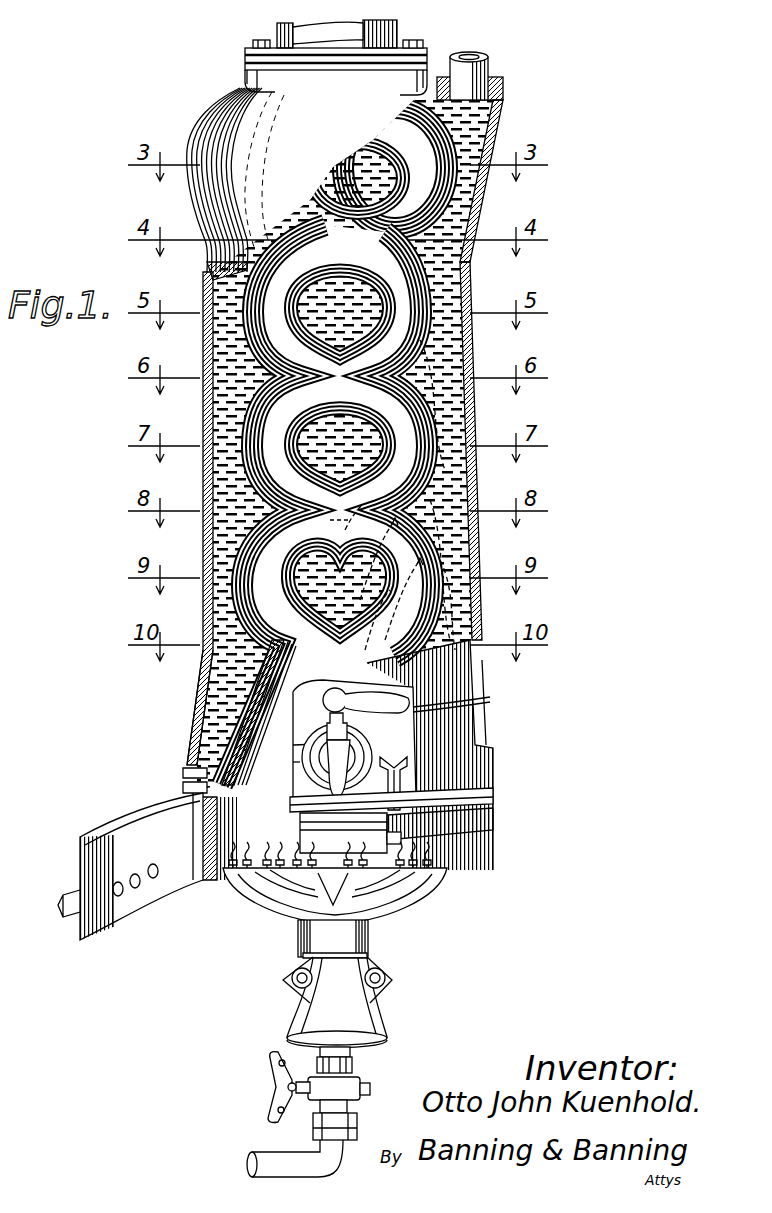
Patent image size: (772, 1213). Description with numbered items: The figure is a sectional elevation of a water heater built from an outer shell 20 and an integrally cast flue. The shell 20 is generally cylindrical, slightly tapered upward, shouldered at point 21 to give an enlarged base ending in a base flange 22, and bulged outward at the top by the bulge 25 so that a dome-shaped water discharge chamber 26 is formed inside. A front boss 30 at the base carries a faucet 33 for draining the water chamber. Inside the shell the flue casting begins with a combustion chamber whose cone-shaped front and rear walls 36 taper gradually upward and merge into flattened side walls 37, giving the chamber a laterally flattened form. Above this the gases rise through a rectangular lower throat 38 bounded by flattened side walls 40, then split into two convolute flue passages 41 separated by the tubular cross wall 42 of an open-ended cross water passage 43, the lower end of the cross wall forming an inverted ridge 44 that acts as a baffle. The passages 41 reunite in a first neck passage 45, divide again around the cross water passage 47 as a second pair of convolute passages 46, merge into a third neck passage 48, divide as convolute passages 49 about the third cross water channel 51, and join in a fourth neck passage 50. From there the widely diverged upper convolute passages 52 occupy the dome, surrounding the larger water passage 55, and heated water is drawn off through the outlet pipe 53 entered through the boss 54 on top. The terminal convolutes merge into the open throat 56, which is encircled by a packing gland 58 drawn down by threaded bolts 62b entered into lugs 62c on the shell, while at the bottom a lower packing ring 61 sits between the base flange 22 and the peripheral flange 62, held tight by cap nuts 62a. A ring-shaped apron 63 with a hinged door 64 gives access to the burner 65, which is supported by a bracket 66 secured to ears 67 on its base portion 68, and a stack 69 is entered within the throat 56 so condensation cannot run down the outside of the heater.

The outer shell 20 is at (470, 422).
The shoulder point 21 is at (203, 697).
The base flange 22 is at (187, 775).
The outward bulge 25 is at (200, 165).
The water discharge chamber 26 is at (478, 210).
The front boss 30 is at (326, 786).
The faucet 33 is at (352, 752).
The front and rear walls 36 is at (388, 668).
The side walls 37 is at (228, 773).
The lower open necked throat 38 is at (375, 581).
The flattened side walls 40 is at (284, 661).
The convolute flue passages 41 is at (265, 578).
The tubular cross wall 42 is at (293, 614).
The cross water passage 43 is at (330, 590).
The inverted ridge 44 is at (306, 644).
The first intermediate neck passage 45 is at (327, 526).
The second pair of convolute passages 46 is at (333, 472).
The cross water passage 47 is at (335, 443).
The third neck passage 48 is at (327, 512).
The convolute passages 49 is at (330, 339).
The fourth neck passage 50 is at (340, 255).
The third cross water channel 51 is at (320, 328).
The upper convolute passages 52 is at (497, 140).
The outlet pipe 53 is at (483, 66).
The boss 54 is at (505, 93).
The water passage 55 is at (347, 172).
The open throat 56 is at (397, 32).
The packing gland 58 is at (245, 53).
The lower packing ring 61 is at (226, 787).
The peripheral flange 62 is at (193, 796).
The cap nuts 62a is at (494, 800).
The threaded bolts 62b is at (456, 36).
The lugs 62c is at (488, 66).
The ring shaped apron 63 is at (445, 855).
The hinged door 64 is at (178, 870).
The burner 65 is at (305, 895).
The bracket 66 is at (288, 985).
The ears 67 is at (370, 960).
The base portion 68 is at (345, 1012).
The stack 69 is at (258, 42).